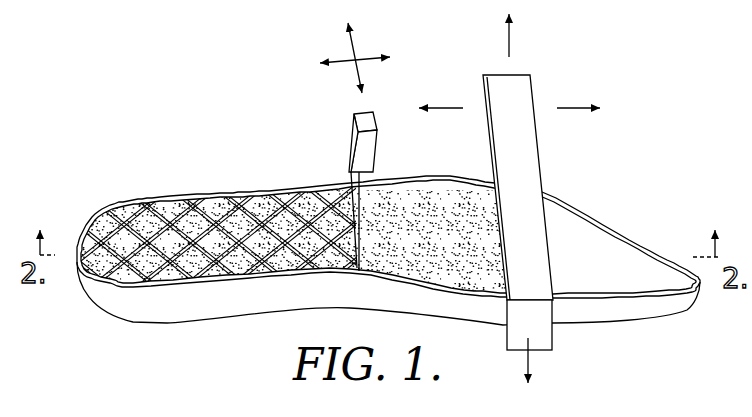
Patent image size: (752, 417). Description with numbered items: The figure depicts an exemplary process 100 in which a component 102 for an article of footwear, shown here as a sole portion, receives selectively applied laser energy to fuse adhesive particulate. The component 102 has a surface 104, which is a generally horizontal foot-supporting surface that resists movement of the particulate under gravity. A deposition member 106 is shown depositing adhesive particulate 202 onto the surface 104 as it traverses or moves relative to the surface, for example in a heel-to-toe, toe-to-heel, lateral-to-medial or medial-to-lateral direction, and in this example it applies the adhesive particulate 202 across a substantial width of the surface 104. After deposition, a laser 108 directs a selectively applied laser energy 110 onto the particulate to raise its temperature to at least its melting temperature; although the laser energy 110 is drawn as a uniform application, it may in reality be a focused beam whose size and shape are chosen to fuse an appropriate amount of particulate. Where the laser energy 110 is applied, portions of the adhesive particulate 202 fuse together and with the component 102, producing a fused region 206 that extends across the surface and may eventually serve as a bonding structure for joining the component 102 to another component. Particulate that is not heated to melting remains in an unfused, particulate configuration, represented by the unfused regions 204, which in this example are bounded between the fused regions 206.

The process 100 is at (384, 208).
The component 102 is at (171, 307).
The surface 104 is at (611, 243).
The deposition member 106 is at (521, 105).
The laser 108 is at (345, 132).
The laser energy 110 is at (366, 180).
The adhesive particulate 202 is at (444, 198).
The unfused regions 204 is at (146, 220).
The fused region 206 is at (182, 220).